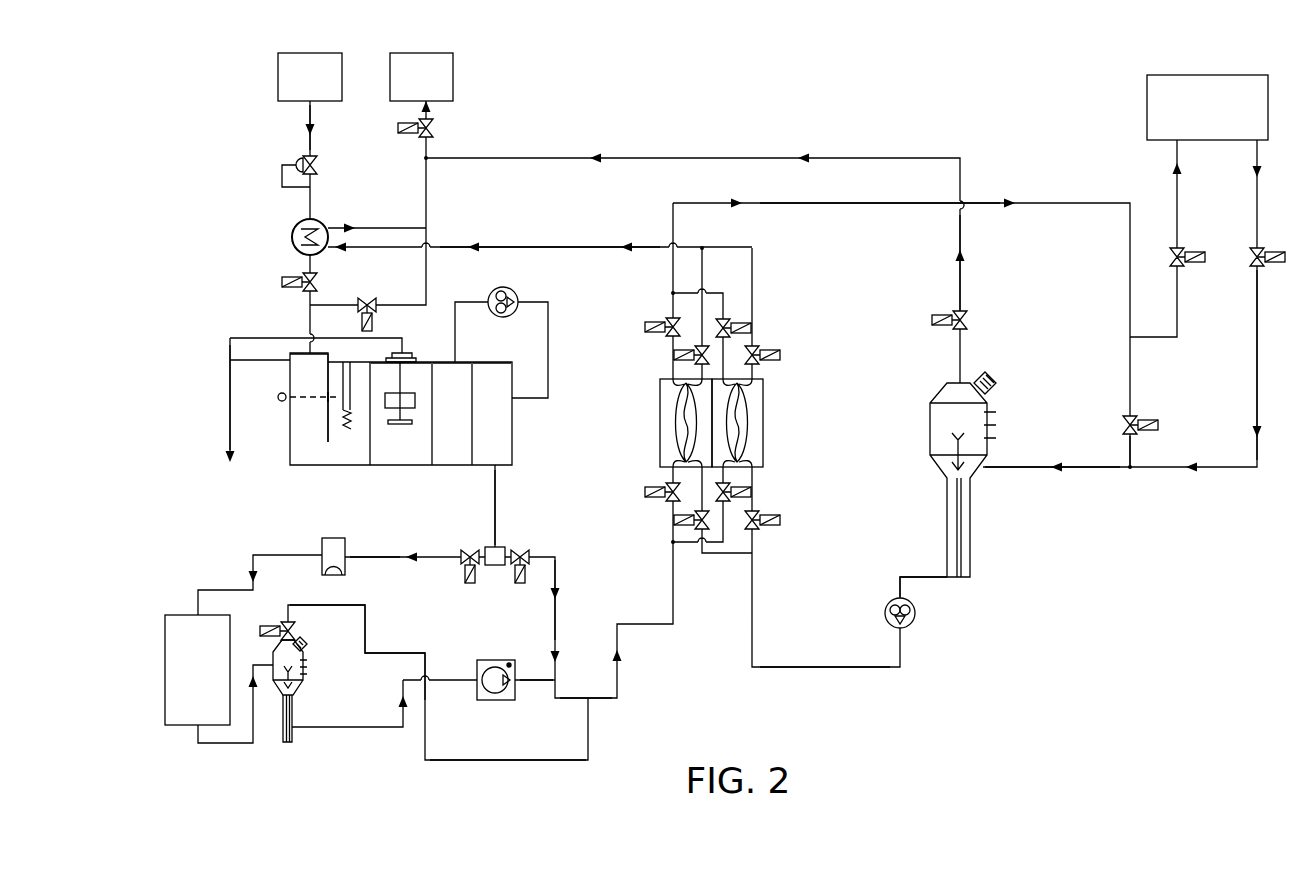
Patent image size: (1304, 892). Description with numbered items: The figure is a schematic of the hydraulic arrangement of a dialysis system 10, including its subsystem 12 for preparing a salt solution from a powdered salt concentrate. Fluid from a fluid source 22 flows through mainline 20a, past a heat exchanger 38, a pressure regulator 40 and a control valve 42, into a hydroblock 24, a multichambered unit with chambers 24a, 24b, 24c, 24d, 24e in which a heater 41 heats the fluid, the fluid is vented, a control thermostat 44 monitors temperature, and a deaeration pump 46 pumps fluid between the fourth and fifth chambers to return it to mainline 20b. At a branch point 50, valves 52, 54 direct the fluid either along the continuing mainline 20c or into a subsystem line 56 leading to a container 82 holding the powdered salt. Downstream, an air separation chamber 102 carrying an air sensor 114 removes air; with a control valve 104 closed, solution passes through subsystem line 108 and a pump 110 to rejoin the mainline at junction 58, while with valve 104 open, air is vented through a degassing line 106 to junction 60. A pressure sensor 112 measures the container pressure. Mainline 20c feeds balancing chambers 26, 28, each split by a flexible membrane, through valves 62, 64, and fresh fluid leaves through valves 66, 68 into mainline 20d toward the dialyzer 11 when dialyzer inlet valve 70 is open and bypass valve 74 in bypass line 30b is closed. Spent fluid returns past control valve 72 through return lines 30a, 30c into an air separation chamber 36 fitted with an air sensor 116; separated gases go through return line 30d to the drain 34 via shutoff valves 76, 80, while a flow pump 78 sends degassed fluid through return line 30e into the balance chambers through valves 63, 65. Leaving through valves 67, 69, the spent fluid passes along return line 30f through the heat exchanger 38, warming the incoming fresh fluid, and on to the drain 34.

The dialysis system 10 is at (822, 702).
The dialyzer 11 is at (1207, 107).
The subsystem for preparing a salt solution 12 is at (549, 769).
The mainline 20a is at (309, 143).
The mainline 20b is at (497, 518).
The mainline 20c is at (557, 606).
The mainline 20d is at (798, 205).
The fluid source 22 is at (310, 77).
The hydroblock 24 is at (401, 414).
The chamber 24a is at (297, 425).
The chamber 24b is at (348, 452).
The chamber 24c is at (406, 443).
The chamber 24d is at (442, 443).
The chamber 24e is at (497, 447).
The balancing chamber 26 is at (660, 420).
The balancing chamber 28 is at (763, 418).
The return line 30a is at (1254, 394).
The bypass line 30b is at (1132, 445).
The return line 30c is at (998, 470).
The return line 30d is at (962, 285).
The return line 30e is at (915, 580).
The return line 30f is at (532, 247).
The drain 34 is at (421, 77).
The air separation chamber 36 is at (932, 428).
The heat exchanger 38 is at (293, 239).
The pressure regulator 40 is at (313, 176).
The heater 41 is at (352, 384).
The control valve 42 is at (301, 281).
The control thermostat 44 is at (280, 397).
The deaeration pump 46 is at (512, 294).
The branch point 50 is at (495, 570).
The valve 52 is at (517, 572).
The valve 54 is at (468, 566).
The subsystem line 56 is at (355, 553).
The junction 58 is at (557, 680).
The junction 60 is at (590, 699).
The valve 62 is at (668, 497).
The valve 63 is at (683, 531).
The valve 64 is at (745, 488).
The valve 65 is at (766, 518).
The valve 66 is at (664, 318).
The valve 67 is at (682, 354).
The valve 68 is at (738, 322).
The valve 69 is at (758, 352).
The dialyzer inlet valve 70 is at (1180, 256).
The control valve 72 is at (1262, 256).
The bypass valve 74 is at (1136, 420).
The shutoff valve 76 is at (963, 325).
The flow pump 78 is at (885, 613).
The shutoff valve 80 is at (434, 127).
The container 82 is at (197, 670).
The air separation chamber 102 is at (305, 675).
The control valve 104 is at (281, 630).
The degassing line 106 is at (365, 633).
The subsystem line 108 is at (304, 729).
The pump 110 is at (490, 700).
The pressure sensor 112 is at (322, 558).
The air sensor 114 is at (303, 642).
The air sensor 116 is at (993, 385).